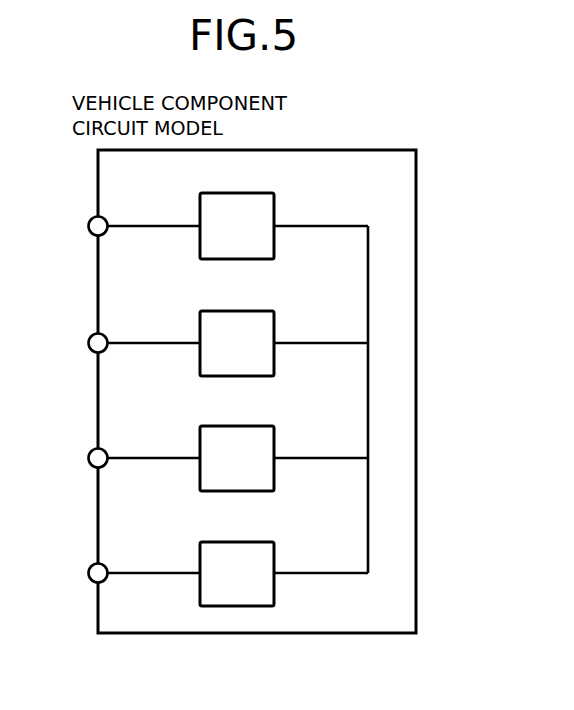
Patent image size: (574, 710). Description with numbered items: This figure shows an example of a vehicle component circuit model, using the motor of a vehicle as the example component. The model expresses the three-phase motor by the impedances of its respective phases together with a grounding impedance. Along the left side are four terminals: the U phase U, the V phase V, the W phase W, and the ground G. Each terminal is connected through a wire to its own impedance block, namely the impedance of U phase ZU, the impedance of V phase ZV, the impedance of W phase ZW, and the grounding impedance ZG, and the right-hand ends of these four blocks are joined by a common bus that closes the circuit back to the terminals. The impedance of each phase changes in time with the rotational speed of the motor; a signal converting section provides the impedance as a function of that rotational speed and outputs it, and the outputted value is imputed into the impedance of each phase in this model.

The U phase U is at (145, 209).
The V phase V is at (145, 326).
The W phase W is at (145, 442).
The ground G is at (145, 557).
The impedance of U phase ZU is at (284, 226).
The impedance of V phase ZV is at (284, 343).
The impedance of W phase ZW is at (284, 458).
The grounding impedance ZG is at (284, 574).